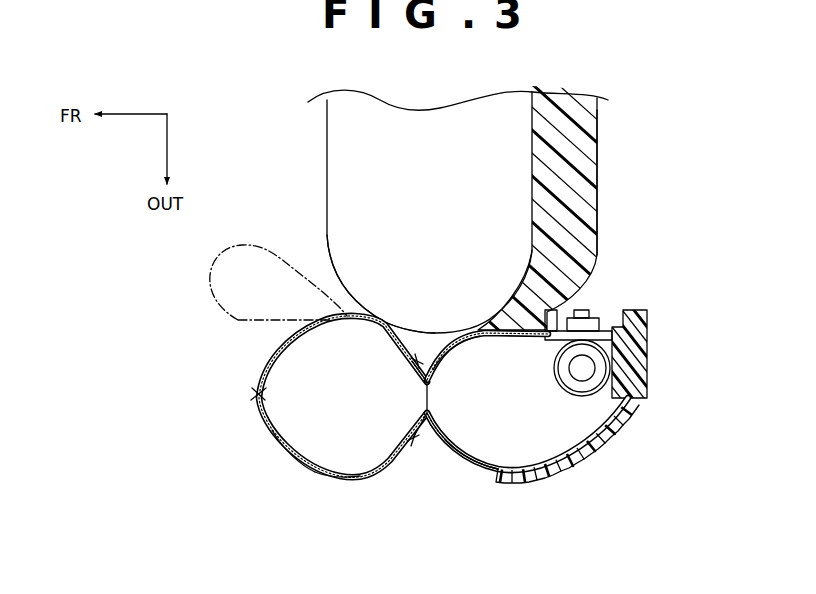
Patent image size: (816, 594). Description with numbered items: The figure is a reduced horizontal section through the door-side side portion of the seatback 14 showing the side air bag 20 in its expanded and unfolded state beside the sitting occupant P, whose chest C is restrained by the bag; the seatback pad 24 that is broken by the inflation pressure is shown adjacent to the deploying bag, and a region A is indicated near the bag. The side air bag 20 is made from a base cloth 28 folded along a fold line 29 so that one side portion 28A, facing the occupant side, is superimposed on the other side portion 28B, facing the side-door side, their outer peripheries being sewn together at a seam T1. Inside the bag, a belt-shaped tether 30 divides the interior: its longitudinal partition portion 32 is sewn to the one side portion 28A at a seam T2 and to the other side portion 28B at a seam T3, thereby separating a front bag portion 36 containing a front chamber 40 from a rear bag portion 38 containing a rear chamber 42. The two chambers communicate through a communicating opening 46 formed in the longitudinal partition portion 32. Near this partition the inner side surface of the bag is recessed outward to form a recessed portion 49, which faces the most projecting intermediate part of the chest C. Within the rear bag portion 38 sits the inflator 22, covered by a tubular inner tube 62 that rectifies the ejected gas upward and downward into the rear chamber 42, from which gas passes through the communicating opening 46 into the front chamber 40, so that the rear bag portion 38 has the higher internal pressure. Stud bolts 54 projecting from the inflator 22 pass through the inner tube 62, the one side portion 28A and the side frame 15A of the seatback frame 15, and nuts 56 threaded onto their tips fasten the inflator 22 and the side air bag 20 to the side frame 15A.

The sitting occupant P is at (324, 154).
The chest C is at (325, 195).
The airbag deployment region A is at (238, 320).
The seatback 14 is at (612, 152).
The seatback pad 24 is at (600, 193).
The stud bolts 54 is at (555, 310).
The nuts 56 is at (595, 314).
The seatback frame 15 is at (656, 324).
The side frame 15A is at (645, 330).
The fold line 29 is at (647, 355).
The inflator 22 is at (648, 374).
The inner tube 62 is at (626, 416).
The base cloth 28 is at (424, 403).
The one side portion 28A is at (410, 328).
The other side portion 28B is at (400, 468).
The tether 30 is at (493, 441).
The longitudinal partition portion 32 is at (443, 418).
The front chamber 40 is at (343, 396).
The rear chamber 42 is at (527, 401).
The communicating opening 46 is at (428, 387).
The recessed portion 49 is at (445, 352).
The front bag portion 36 is at (287, 452).
The side air bag 20 is at (323, 470).
The rear bag portion 38 is at (473, 470).
The seam T1 is at (257, 403).
The seam T2 is at (413, 360).
The seam T3 is at (410, 438).